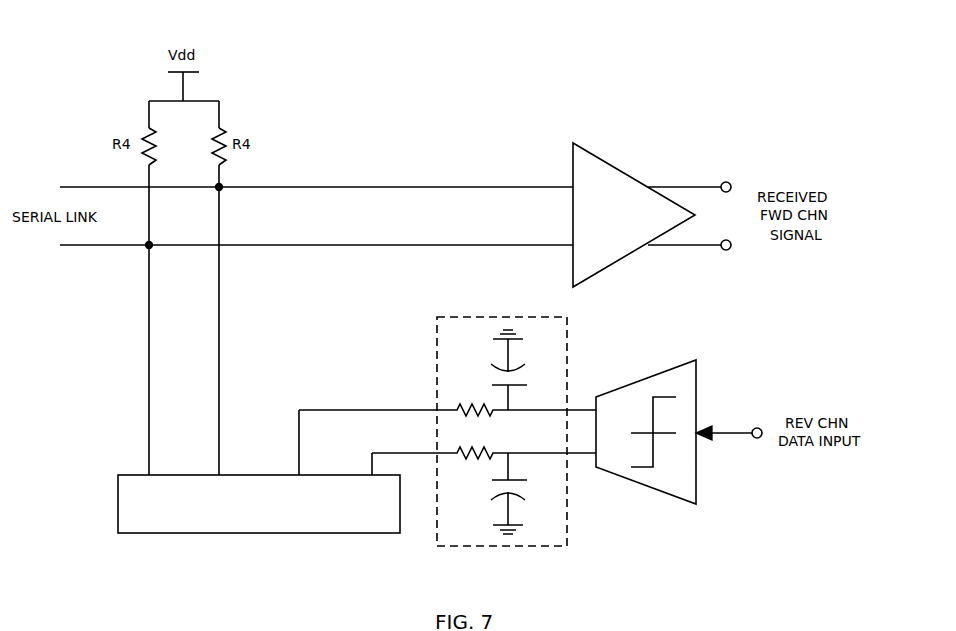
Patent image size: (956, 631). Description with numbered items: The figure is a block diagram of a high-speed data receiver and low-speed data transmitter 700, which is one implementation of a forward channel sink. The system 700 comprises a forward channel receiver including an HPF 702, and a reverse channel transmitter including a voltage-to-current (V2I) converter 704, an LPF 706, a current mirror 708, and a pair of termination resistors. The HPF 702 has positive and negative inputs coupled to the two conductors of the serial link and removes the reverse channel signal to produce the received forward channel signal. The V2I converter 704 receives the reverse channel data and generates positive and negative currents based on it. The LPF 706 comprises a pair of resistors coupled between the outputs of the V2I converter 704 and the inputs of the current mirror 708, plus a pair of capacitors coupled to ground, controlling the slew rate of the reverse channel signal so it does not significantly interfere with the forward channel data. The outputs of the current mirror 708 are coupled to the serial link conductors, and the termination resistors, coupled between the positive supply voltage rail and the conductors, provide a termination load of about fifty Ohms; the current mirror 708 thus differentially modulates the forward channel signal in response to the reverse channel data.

The high-speed data receiver and low-speed data transmitter 700 is at (683, 74).
The HPF 702 is at (610, 161).
The voltage-to-current (V2I) converter 704 is at (675, 362).
The LPF 706 is at (490, 316).
The current mirror 708 is at (130, 474).